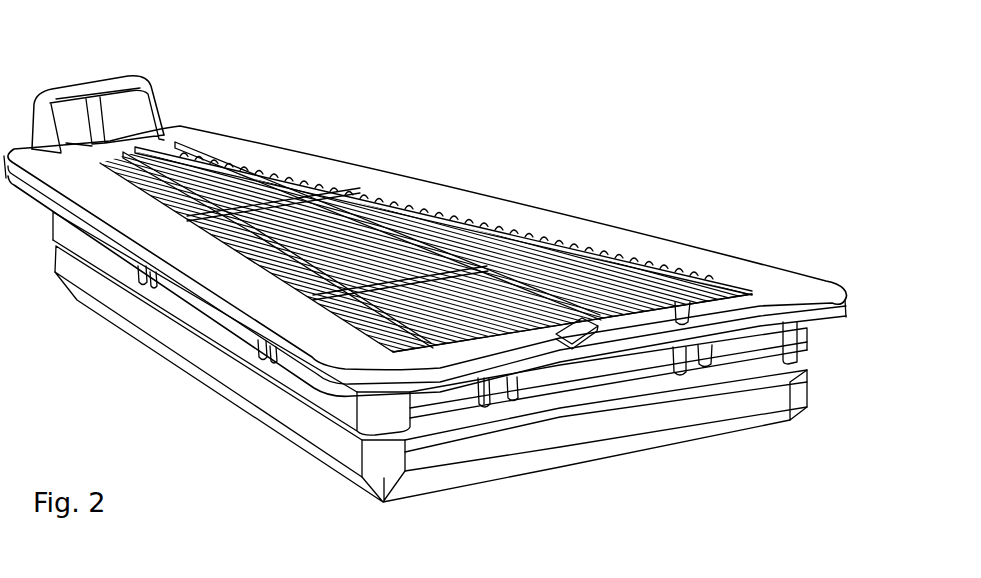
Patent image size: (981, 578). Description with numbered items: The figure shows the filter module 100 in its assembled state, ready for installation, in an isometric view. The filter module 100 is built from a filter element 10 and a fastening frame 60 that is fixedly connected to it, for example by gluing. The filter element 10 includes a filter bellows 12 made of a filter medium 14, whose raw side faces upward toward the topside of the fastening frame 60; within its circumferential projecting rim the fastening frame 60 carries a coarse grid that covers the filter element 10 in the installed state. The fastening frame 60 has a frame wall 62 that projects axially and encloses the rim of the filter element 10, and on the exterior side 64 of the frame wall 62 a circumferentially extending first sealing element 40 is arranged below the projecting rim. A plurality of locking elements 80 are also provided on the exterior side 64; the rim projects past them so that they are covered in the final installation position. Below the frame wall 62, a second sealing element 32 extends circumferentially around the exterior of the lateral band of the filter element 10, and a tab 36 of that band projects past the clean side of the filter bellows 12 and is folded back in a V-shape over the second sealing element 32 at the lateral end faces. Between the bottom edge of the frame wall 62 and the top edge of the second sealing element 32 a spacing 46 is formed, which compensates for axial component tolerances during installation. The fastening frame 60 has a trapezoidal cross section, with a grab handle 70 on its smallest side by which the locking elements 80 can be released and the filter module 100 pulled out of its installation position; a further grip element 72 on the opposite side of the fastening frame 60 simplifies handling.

The filter module 100 is at (762, 180).
The filter element 10 is at (620, 268).
The filter bellows 12 is at (497, 247).
The filter medium 14 is at (430, 285).
The second sealing element 32 is at (167, 332).
The tab 36 is at (423, 487).
The first sealing element 40 is at (297, 387).
The spacing 46 is at (222, 350).
The fastening frame 60 is at (440, 185).
The frame wall 62 is at (345, 415).
The exterior side 64 is at (606, 417).
The grab handle 70 is at (86, 90).
The grip element 72 is at (568, 345).
The locking elements 80 is at (703, 365).